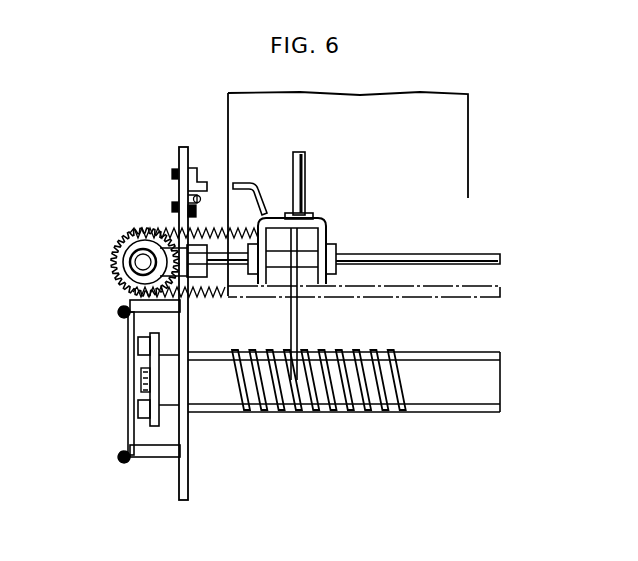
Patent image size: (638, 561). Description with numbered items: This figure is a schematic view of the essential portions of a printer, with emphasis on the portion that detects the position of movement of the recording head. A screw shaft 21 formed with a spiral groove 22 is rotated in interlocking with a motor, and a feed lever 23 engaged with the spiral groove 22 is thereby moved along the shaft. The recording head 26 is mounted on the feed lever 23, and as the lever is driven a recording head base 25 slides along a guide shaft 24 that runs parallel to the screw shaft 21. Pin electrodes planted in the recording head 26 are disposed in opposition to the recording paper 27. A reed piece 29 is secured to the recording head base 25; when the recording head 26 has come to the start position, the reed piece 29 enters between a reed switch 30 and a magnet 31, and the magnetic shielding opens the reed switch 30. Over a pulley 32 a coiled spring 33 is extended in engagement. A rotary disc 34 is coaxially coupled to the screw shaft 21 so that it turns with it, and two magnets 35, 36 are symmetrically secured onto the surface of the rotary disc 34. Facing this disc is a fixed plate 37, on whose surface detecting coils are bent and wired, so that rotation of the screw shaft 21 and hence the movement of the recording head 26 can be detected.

The screw shaft 21 is at (217, 412).
The spiral groove 22 is at (325, 413).
The feed lever 23 is at (299, 323).
The guide shaft 24 is at (436, 252).
The recording head base 25 is at (329, 241).
The recording head 26 is at (300, 151).
The recording paper 27 is at (462, 127).
The reed piece 29 is at (249, 182).
The reed switch 30 is at (201, 200).
The magnet 31 is at (207, 180).
The pulley 32 is at (125, 262).
The coiled spring 33 is at (147, 231).
The rotary disc 34 is at (158, 432).
The magnet 35 is at (138, 342).
The magnet 36 is at (138, 408).
The fixed plate 37 is at (130, 436).